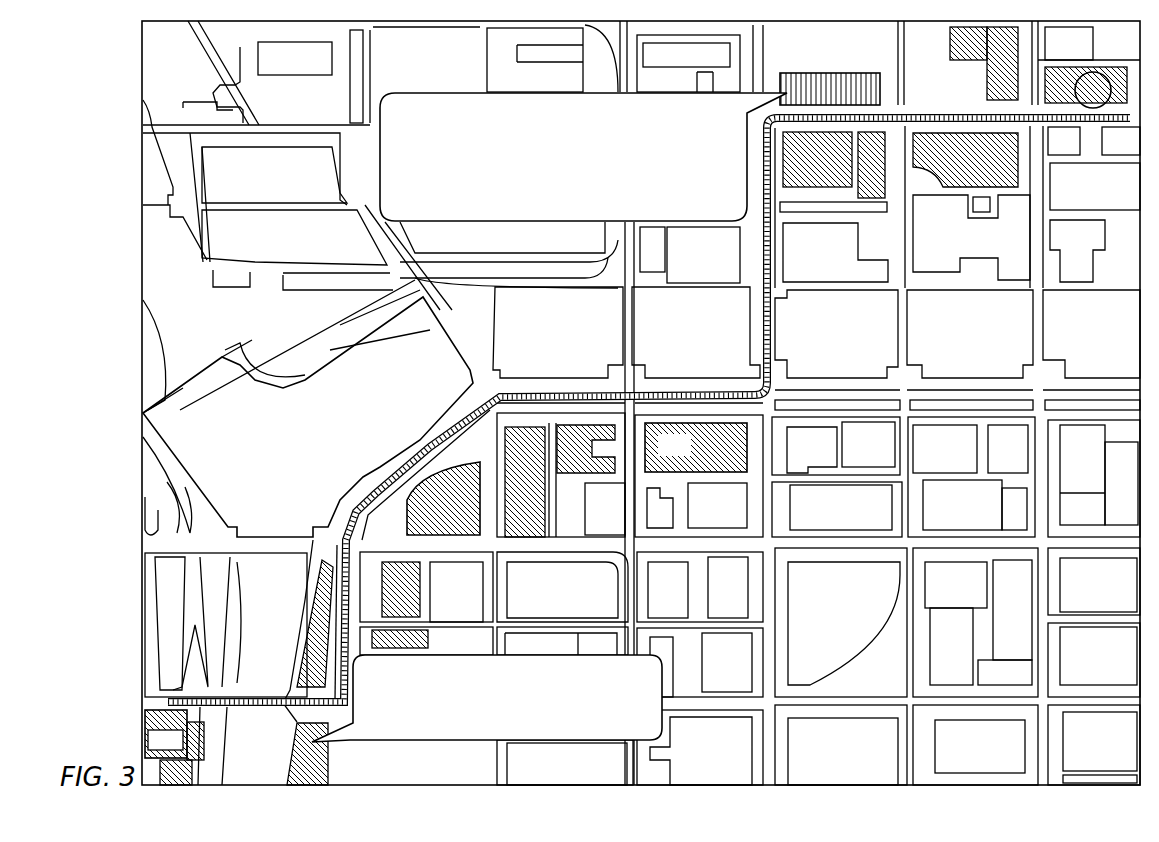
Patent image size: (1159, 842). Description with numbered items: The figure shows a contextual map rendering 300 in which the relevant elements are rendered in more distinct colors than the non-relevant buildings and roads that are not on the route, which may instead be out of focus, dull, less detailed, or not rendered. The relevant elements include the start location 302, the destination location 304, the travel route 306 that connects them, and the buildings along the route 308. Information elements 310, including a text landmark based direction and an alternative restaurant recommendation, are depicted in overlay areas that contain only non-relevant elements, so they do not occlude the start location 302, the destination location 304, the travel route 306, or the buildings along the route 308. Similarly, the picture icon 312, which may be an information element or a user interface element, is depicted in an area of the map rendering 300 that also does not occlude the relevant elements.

The map rendering 300 is at (763, 785).
The start location 302 is at (205, 737).
The destination location 304 is at (1090, 121).
The travel route 306 is at (407, 467).
The buildings along the route 308 is at (696, 447).
The information elements 310 is at (397, 93).
The picture icon 312 is at (883, 85).